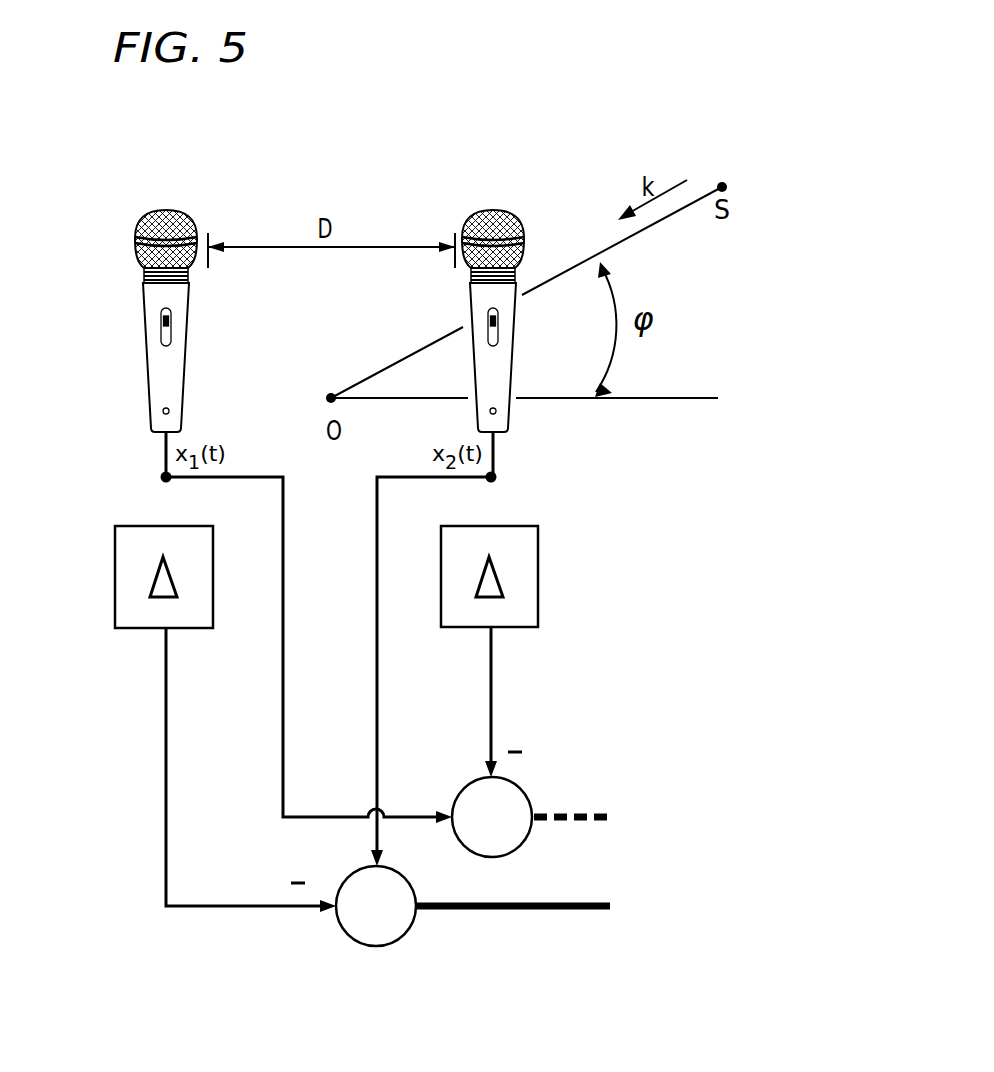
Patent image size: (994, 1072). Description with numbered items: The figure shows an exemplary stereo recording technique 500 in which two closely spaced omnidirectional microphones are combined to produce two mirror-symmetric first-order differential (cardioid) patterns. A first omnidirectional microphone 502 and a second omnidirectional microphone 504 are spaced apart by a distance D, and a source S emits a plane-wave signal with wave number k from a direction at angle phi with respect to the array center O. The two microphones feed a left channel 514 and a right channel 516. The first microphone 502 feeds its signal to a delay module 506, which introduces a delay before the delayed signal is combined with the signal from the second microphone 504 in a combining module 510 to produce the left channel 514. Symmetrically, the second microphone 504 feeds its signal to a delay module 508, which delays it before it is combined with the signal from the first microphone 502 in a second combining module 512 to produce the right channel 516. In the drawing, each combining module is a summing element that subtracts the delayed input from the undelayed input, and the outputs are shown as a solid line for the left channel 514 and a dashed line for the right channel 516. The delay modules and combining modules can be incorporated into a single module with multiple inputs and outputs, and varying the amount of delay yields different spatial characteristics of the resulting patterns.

The stereo recording technique 500 is at (578, 130).
The first omnidirectional microphone 502 is at (136, 240).
The second omnidirectional microphone 504 is at (490, 209).
The delay module 506 is at (115, 572).
The delay module 508 is at (539, 573).
The combining module 510 is at (376, 946).
The second summer (subtractor) 512 is at (492, 857).
The left channel 514 is at (686, 908).
The right channel 516 is at (686, 820).